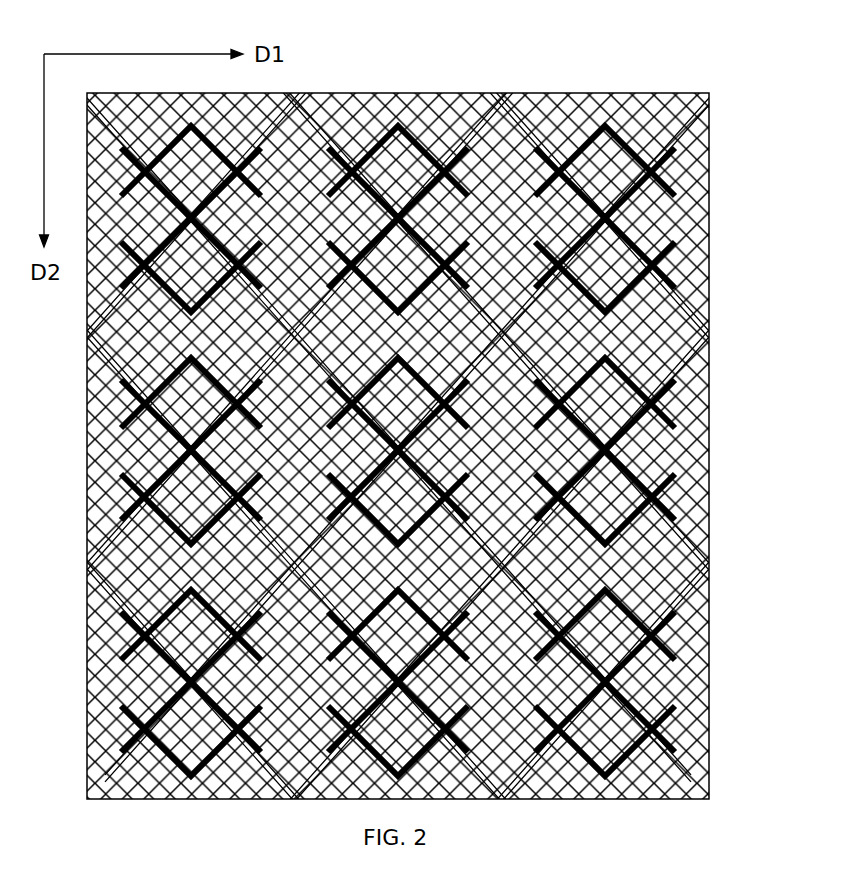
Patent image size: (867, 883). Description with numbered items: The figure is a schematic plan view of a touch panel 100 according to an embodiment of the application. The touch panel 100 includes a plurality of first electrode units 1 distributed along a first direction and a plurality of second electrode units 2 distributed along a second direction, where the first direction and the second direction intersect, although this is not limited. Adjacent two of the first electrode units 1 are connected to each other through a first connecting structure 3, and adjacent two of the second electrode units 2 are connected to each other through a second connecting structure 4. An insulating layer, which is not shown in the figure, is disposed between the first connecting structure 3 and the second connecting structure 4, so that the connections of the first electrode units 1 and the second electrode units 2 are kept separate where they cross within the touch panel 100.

The touch panel 100 is at (433, 441).
The first electrode units 1 is at (713, 162).
The second electrode units 2 is at (567, 127).
The first connecting structure 3 is at (711, 248).
The second connecting structure 4 is at (608, 150).